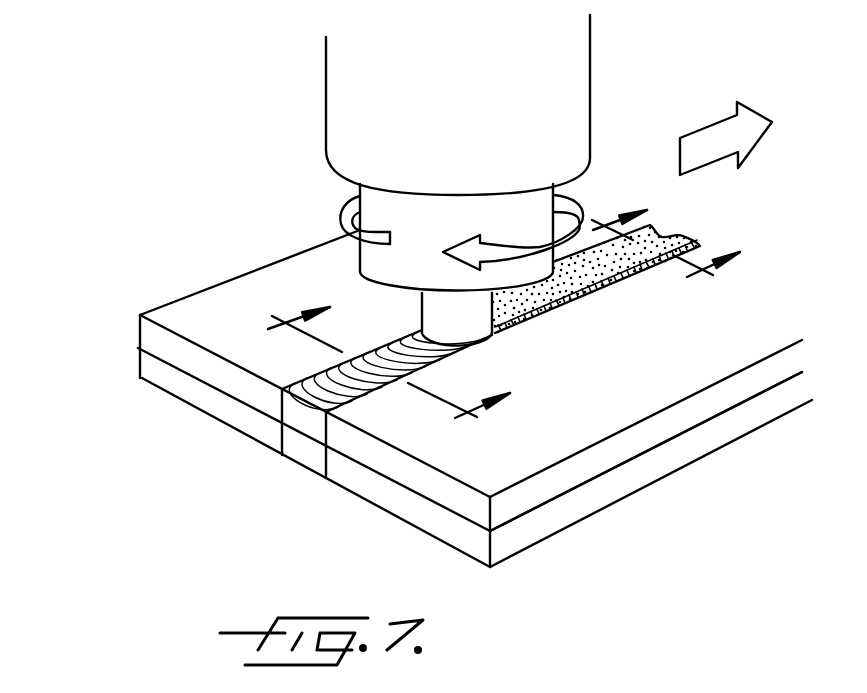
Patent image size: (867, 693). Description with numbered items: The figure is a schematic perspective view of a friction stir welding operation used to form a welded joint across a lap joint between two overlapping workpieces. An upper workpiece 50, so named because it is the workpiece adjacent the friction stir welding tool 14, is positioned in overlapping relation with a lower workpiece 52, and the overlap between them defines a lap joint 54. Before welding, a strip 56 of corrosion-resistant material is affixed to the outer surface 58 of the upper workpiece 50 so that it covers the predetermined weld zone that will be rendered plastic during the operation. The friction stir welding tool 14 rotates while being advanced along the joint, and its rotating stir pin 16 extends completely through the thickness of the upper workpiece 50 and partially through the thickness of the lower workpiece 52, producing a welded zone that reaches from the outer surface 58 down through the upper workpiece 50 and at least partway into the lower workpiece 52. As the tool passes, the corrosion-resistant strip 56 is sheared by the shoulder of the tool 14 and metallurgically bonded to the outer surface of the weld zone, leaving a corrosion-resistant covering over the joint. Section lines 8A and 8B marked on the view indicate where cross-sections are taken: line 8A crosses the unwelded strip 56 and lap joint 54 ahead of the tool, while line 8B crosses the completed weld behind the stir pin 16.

The friction stir welding tool 14 is at (340, 100).
The stir pin 16 is at (434, 310).
The upper workpiece 50 is at (148, 338).
The lower workpiece 52 is at (153, 378).
The lap joint 54 is at (605, 474).
The strip of corrosion-resistant material 56 is at (603, 264).
The outer surface 58 is at (614, 389).
The section line 8A- 8A is at (690, 224).
The section line 8B- 8B is at (359, 384).